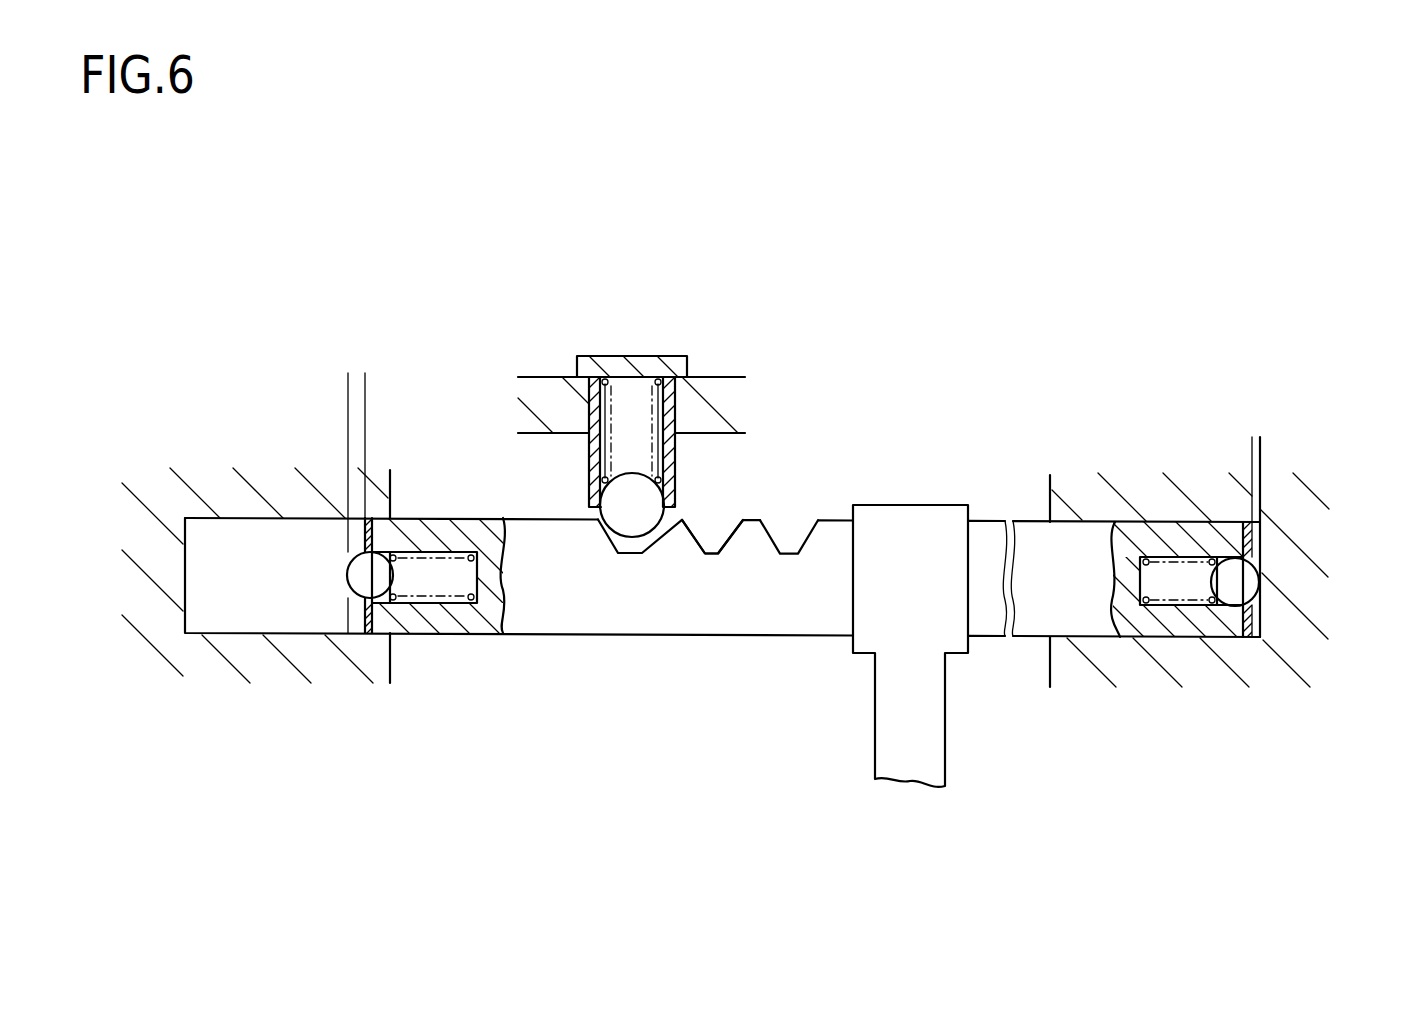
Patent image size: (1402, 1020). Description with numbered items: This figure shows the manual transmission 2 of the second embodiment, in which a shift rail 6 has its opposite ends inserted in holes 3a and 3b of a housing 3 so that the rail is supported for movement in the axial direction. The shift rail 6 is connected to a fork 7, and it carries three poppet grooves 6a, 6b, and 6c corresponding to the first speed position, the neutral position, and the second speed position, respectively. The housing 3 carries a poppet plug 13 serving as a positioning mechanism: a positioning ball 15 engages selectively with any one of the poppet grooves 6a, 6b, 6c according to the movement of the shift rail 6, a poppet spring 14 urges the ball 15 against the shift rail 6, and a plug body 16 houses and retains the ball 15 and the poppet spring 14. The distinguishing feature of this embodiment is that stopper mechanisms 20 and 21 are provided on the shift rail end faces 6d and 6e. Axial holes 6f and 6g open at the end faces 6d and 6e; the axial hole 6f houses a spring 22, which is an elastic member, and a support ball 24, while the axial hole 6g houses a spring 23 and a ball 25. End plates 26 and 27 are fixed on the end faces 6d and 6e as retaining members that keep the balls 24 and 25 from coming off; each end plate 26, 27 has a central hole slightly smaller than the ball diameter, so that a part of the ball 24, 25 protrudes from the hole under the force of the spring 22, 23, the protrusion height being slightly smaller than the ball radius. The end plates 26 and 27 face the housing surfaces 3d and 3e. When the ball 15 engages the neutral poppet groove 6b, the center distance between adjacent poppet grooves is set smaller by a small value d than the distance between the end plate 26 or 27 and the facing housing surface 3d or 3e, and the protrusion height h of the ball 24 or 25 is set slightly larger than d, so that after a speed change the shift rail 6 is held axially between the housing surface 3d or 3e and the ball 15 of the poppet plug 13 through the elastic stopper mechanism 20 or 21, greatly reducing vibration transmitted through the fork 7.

The detent mechanism 2 is at (998, 302).
The housing 3 is at (1158, 403).
The hole 3a is at (1072, 520).
The hole 3b is at (273, 517).
The housing surface 3d is at (1263, 610).
The housing surface 3e is at (188, 538).
The shift rail 6 is at (990, 520).
The poppet groove 6a is at (628, 556).
The poppet groove 6b is at (710, 545).
The poppet groove 6c is at (790, 545).
The shift rail end face 6d is at (1263, 537).
The shift rail end face 6e is at (376, 530).
The axial hole 6f is at (1167, 583).
The axial hole 6g is at (418, 584).
The fork 7 is at (901, 752).
The poppet plug 13 is at (620, 355).
The poppet spring 14 is at (663, 378).
The positioning ball 15 is at (651, 504).
The plug body 16 is at (577, 370).
The stopper mechanism 20 is at (1103, 727).
The stopper mechanism 21 is at (300, 724).
The spring 22 is at (1143, 598).
The spring 23 is at (470, 610).
The support ball 24 is at (1232, 590).
The ball 25 is at (360, 587).
The end plate 26 is at (1246, 606).
The end plate 27 is at (371, 604).